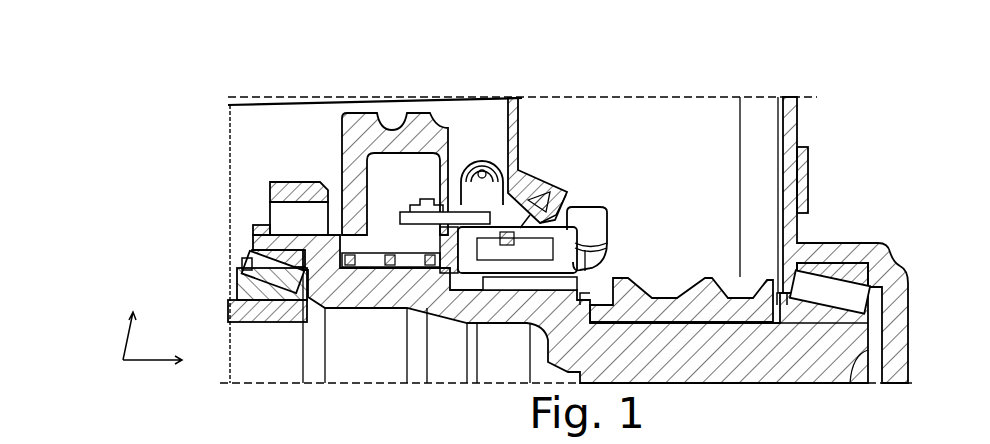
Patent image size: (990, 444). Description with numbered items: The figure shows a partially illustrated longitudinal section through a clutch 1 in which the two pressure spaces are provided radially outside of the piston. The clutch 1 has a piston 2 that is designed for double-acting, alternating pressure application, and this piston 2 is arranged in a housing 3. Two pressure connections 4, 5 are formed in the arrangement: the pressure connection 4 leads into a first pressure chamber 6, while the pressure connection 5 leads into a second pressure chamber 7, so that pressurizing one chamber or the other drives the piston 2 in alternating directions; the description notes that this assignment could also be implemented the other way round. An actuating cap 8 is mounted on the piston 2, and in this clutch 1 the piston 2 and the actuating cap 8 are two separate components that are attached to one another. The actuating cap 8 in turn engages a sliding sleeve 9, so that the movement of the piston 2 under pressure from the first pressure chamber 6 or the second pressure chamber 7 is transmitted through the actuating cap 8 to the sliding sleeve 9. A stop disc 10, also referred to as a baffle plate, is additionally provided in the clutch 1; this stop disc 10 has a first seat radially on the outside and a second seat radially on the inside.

The clutch 1 is at (722, 72).
The piston 2 is at (545, 220).
The housing 3 is at (563, 210).
The pressure connection 4 is at (600, 225).
The pressure connection 5 is at (556, 215).
The first pressure chamber 6 is at (617, 270).
The second pressure chamber 7 is at (565, 188).
The actuating cap 8 is at (448, 203).
The sliding sleeve 9 is at (388, 208).
The stop disc 10 is at (490, 245).